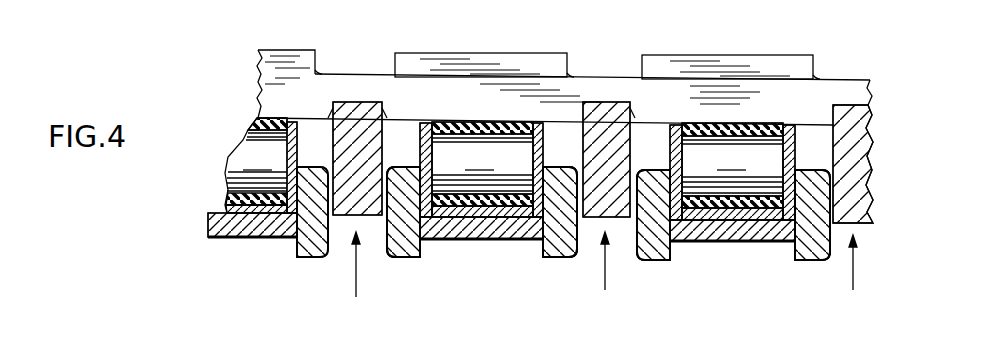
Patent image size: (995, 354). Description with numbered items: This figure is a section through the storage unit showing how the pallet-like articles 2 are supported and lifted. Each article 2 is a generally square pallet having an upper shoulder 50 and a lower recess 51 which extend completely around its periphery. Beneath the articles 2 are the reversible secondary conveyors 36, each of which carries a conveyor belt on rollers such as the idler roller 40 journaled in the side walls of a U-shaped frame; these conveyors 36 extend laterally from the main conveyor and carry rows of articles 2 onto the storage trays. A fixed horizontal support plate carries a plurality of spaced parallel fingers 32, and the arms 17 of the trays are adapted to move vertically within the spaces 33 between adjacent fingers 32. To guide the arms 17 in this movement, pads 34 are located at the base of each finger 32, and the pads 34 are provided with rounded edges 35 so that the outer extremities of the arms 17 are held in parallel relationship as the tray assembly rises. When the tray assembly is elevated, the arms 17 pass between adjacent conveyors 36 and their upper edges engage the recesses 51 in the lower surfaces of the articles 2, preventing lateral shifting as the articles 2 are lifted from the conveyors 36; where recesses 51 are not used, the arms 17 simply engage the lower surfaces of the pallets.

The articles 2 is at (297, 52).
The arms 17 is at (360, 108).
The fingers 32 is at (235, 230).
The spaces 33 is at (340, 243).
The pads 34 is at (307, 250).
The rounded edges 35 is at (390, 172).
The secondary conveyors 36 is at (283, 128).
The idler roller 40 is at (510, 169).
The upper shoulder 50 is at (318, 61).
The lower recess 51 is at (333, 110).